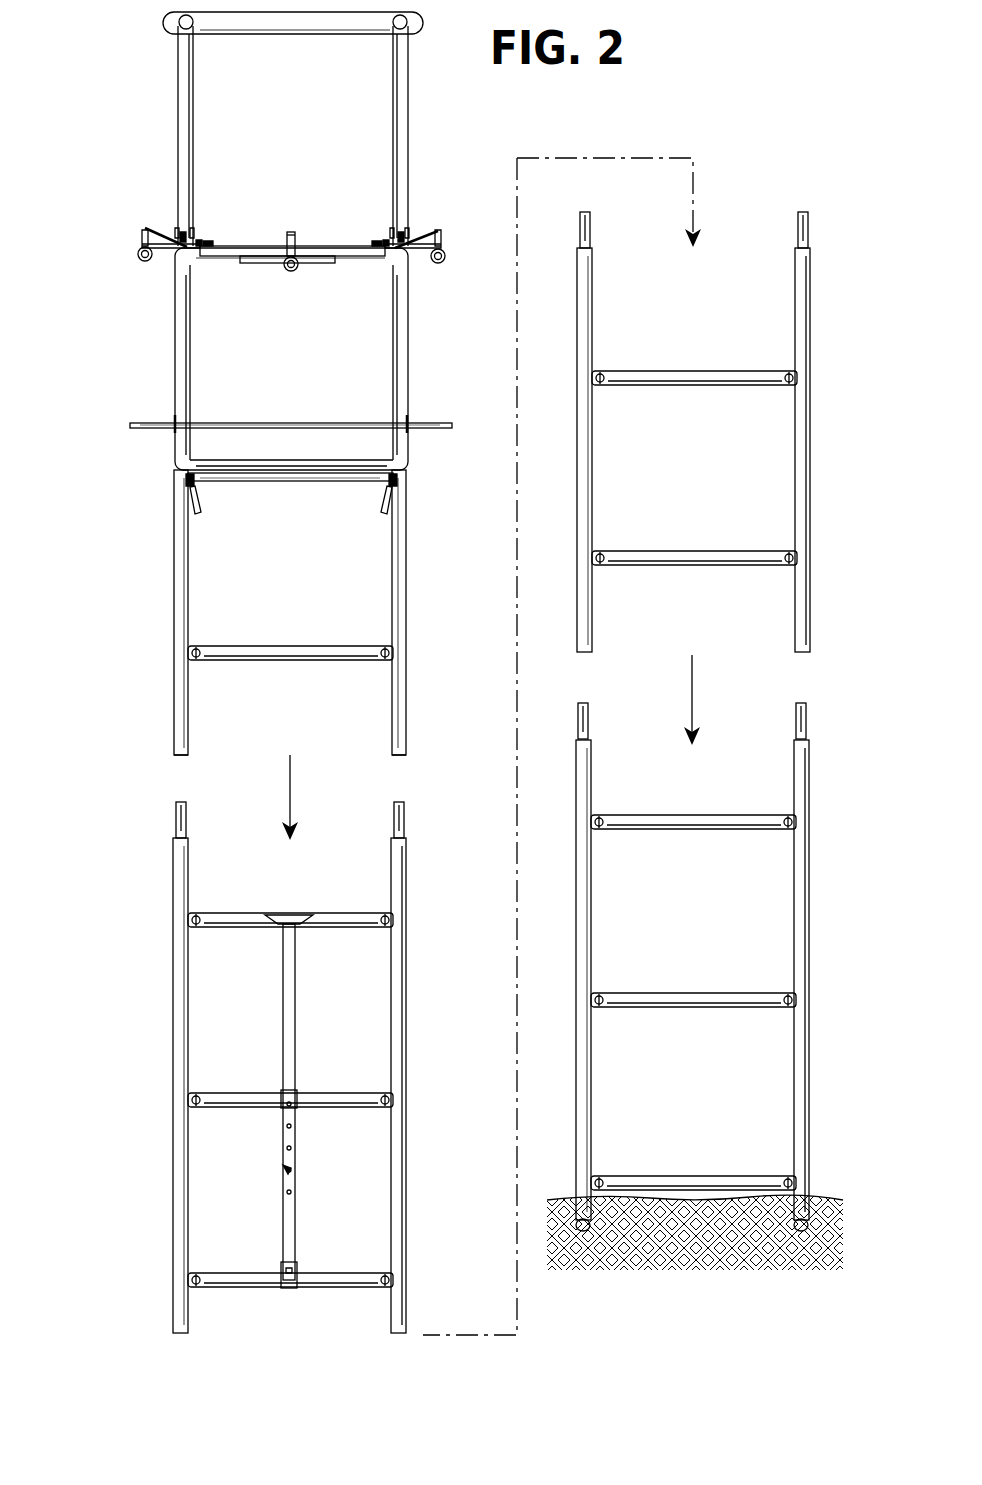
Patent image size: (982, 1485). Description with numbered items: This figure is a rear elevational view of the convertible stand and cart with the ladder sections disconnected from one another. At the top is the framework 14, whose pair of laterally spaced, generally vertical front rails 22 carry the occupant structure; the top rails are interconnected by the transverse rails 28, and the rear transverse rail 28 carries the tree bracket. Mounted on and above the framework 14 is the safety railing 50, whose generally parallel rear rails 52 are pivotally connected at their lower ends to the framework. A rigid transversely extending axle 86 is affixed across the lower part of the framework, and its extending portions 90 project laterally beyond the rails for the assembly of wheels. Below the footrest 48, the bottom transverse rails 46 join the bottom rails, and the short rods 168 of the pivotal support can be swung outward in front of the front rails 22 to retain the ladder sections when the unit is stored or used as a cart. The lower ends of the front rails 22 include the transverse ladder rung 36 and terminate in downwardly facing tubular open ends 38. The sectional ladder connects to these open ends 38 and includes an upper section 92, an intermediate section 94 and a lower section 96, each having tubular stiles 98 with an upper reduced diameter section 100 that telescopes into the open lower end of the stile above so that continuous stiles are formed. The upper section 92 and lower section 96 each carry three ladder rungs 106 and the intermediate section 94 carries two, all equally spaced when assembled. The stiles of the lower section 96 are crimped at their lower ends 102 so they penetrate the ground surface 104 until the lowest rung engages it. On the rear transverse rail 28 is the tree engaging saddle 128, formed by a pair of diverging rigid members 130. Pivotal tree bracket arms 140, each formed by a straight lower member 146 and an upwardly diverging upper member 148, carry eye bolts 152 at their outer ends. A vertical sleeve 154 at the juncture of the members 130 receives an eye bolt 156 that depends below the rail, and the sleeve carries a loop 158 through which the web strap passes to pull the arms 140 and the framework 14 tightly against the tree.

The framework 14 is at (280, 515).
The front rails 22 is at (405, 372).
The transverse rails 28 is at (393, 265).
The transverse ladder rung 36 is at (290, 646).
The tubular open ends 38 is at (404, 748).
The bottom transverse rails 46 is at (291, 513).
The footrest 48 is at (352, 462).
The safety railing 50 is at (240, 129).
The rear legs or rails 52 is at (187, 105).
The axle 86 is at (270, 422).
The extending portions of the axle 90 is at (258, 415).
The upper section 92 is at (148, 1058).
The second or intermediate section 94 is at (840, 436).
The lower section 96 is at (840, 912).
The tubular stiles 98 is at (406, 1010).
The upper reduced diameter section 100 is at (405, 815).
The crimped lower ends 102 is at (584, 1232).
The ground surface 104 is at (830, 1197).
The ladder rungs 106 is at (231, 1098).
The tree engaging saddle 128 is at (352, 245).
The rigid members 130 is at (247, 264).
The tree bracket arms 140 is at (440, 235).
The lower member 146 is at (436, 264).
The upper member 148 is at (428, 238).
The eye bolt 152 is at (137, 254).
The vertical sleeve 154 is at (140, 238).
The eye bolt 156 is at (291, 272).
The loop 158 is at (288, 232).
The rod 168 is at (204, 497).